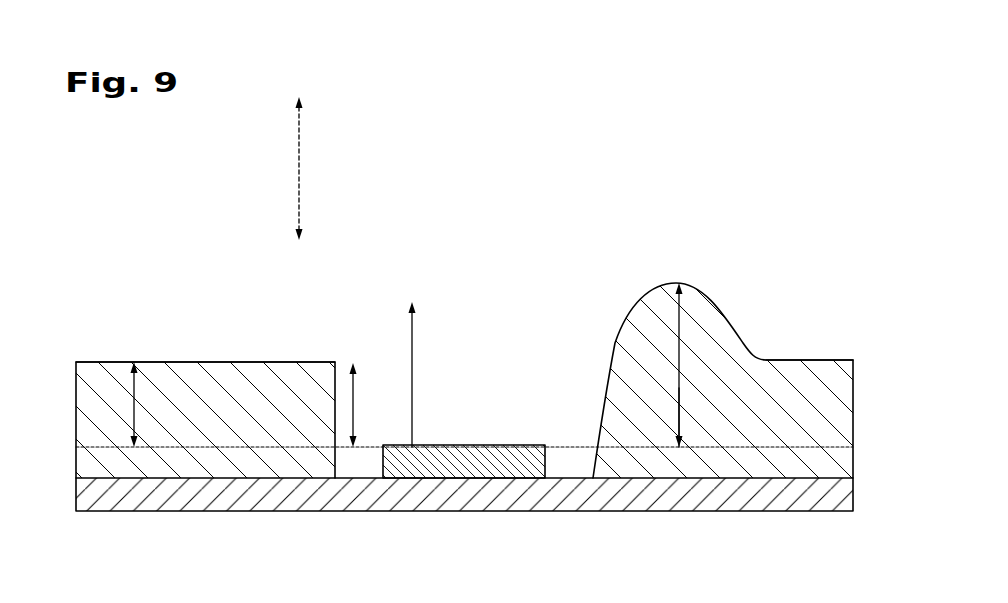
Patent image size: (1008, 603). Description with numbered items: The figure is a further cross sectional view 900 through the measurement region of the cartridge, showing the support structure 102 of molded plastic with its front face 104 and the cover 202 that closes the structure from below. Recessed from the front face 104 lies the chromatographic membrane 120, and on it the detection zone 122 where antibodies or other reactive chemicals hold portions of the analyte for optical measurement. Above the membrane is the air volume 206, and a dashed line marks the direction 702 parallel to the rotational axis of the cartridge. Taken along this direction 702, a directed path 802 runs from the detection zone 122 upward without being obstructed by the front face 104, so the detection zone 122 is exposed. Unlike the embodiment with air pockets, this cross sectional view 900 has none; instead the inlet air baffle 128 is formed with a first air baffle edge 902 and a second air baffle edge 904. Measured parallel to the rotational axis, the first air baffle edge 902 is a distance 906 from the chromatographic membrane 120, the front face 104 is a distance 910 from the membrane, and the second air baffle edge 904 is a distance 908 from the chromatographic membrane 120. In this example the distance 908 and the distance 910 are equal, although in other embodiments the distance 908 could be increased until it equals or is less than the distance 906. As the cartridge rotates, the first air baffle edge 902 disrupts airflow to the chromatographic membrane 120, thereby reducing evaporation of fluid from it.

The cross sectional view 900 is at (122, 298).
The direction parallel to rotational axis 702 is at (299, 178).
The second air baffle edge 904 is at (335, 360).
The directed path 802 is at (412, 353).
The inlet air baffle 128 is at (485, 380).
The air volume 206 is at (535, 390).
The first air baffle edge 902 is at (680, 273).
The support structure 102 is at (762, 370).
The front face 104 is at (817, 358).
The distance 910 is at (134, 408).
The distance 908 is at (353, 405).
The chromatographic membrane 120 is at (427, 470).
The detection zone 122 is at (505, 470).
The distance 906 is at (678, 388).
The cover 202 is at (742, 497).